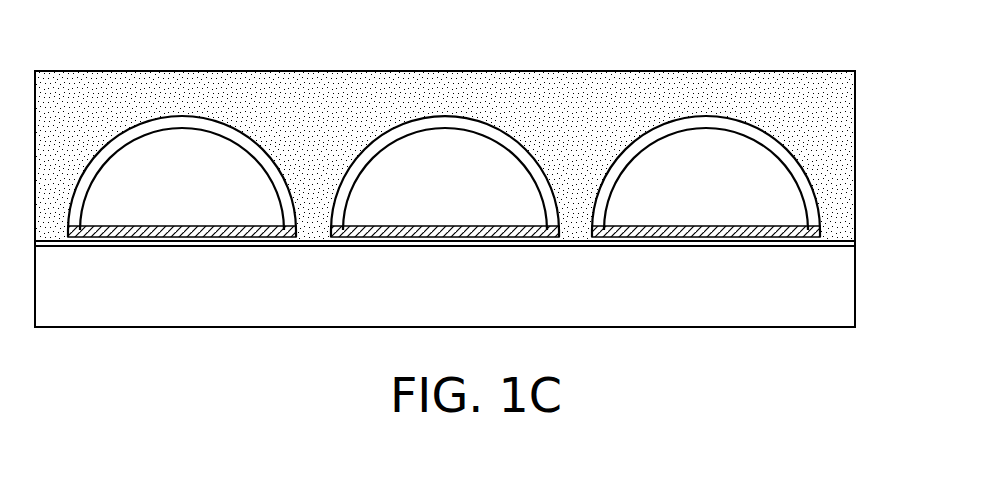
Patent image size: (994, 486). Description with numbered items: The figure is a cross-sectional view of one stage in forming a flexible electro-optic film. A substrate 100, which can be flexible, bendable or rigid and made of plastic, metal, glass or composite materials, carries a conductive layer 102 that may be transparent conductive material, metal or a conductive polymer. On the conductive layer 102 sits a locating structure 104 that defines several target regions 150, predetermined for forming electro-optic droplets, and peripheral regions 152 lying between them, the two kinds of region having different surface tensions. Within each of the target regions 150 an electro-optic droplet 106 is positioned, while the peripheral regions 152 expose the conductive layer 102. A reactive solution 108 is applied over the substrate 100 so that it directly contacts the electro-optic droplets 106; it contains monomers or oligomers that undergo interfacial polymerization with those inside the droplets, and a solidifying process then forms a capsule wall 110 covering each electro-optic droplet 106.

The substrate 100 is at (843, 293).
The conductive layer 102 is at (840, 240).
The locating structure 104 is at (822, 226).
The electro-optic droplets 106 is at (755, 153).
The reactive solution 108 is at (795, 83).
The capsule walls 110 is at (800, 173).
The target regions 150 is at (297, 258).
The peripheral regions 152 is at (330, 258).